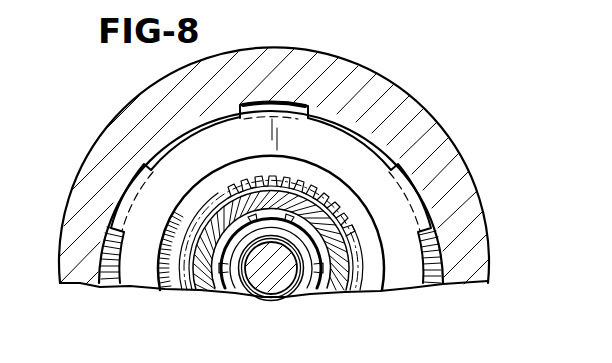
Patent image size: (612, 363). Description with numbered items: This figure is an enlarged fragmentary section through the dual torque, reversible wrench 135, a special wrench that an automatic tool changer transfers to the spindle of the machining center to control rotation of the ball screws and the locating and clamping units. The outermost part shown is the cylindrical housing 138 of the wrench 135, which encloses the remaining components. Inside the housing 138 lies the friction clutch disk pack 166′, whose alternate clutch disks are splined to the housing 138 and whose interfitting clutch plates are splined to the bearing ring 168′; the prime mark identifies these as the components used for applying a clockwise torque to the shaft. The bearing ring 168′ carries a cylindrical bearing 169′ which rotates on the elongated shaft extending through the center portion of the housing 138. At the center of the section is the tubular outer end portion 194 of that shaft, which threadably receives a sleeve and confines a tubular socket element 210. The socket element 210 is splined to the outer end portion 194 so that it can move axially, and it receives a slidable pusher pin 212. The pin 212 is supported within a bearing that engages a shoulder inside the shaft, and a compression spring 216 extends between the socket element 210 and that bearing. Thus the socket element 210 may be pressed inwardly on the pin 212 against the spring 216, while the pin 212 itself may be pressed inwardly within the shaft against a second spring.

The dual torque, reversible wrench 135 is at (349, 54).
The cylindrical housing 138 is at (266, 48).
The friction clutch disk pack 166′ is at (300, 158).
The bearing ring 168′ is at (296, 180).
The cylindrical bearing 169′ is at (253, 195).
The tubular outer end portion 194 is at (218, 180).
The tubular socket element 210 is at (237, 248).
The compression spring 216 is at (246, 297).
The pusher pin 212 is at (294, 292).